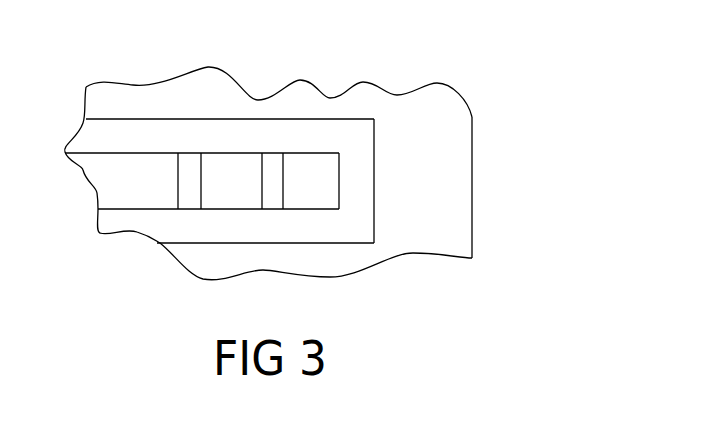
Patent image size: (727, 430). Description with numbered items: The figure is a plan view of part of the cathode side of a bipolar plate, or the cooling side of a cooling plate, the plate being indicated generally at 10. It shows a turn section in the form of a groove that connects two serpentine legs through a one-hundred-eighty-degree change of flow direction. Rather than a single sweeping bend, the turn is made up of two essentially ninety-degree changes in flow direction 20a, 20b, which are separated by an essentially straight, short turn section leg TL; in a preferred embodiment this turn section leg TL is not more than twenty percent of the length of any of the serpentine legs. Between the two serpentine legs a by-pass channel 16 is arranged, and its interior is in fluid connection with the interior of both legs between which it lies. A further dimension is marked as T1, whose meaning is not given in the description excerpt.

The circuit board 10 is at (483, 143).
The by-pass channel 16 is at (187, 190).
The 90° change in flow direction 20a is at (350, 145).
The 90° change in flow direction 20b is at (355, 223).
The layer thickness T1 is at (374, 167).
The turn section leg TL is at (353, 193).